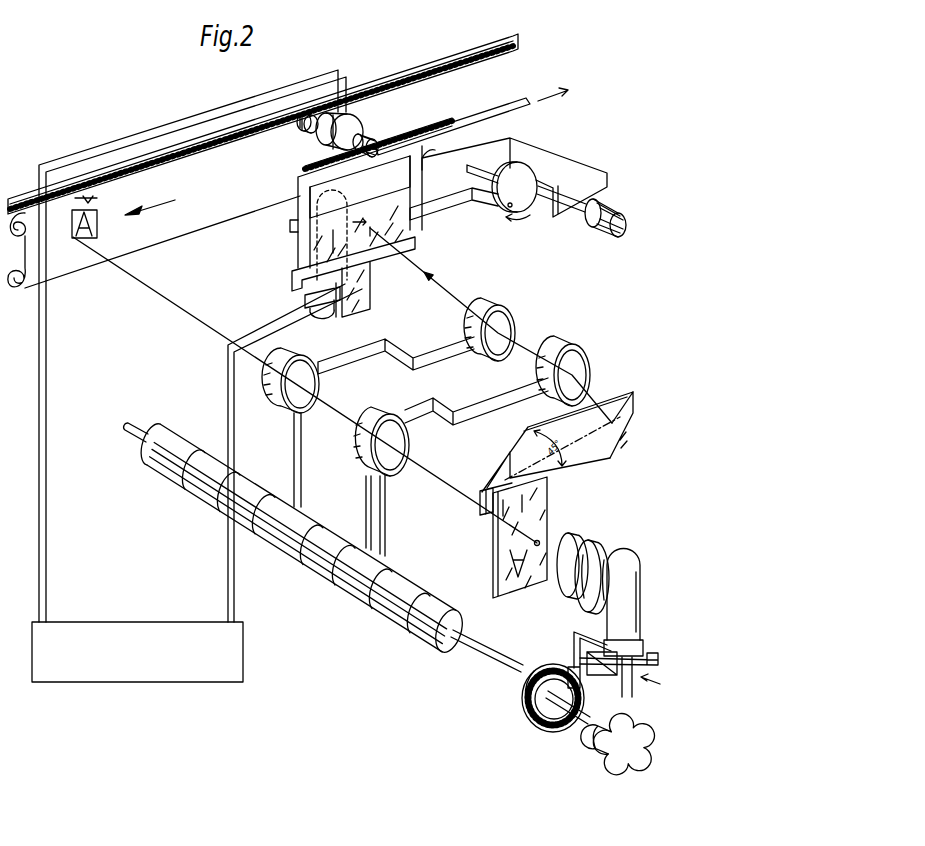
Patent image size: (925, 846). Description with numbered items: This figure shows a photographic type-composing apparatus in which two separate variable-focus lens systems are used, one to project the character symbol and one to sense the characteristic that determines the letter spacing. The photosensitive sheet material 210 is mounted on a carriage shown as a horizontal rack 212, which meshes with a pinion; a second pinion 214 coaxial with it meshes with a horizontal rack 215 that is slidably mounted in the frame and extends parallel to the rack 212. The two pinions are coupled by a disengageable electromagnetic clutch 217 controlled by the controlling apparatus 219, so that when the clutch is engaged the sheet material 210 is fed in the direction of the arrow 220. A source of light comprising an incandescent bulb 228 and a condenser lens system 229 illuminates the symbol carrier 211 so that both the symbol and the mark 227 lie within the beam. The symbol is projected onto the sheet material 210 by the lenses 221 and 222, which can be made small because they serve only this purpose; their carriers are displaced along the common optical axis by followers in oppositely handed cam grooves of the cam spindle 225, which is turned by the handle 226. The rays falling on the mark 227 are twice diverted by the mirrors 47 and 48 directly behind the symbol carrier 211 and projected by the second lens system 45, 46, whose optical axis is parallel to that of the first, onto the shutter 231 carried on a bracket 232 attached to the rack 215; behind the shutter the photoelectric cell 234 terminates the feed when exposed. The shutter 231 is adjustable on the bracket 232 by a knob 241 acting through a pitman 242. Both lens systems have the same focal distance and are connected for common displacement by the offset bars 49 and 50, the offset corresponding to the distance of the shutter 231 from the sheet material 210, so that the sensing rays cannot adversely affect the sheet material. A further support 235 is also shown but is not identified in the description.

The photosensitive sheet material 210 is at (213, 218).
The symbol carrier 211 is at (527, 586).
The rack 212 is at (432, 72).
The second pinion 214 is at (374, 139).
The rack 215 is at (517, 100).
The electromagnetic clutch 217 is at (323, 150).
The controlling apparatus 219 is at (138, 673).
The arrow 220 is at (150, 204).
The lens 221 is at (377, 460).
The lens 222 is at (292, 400).
The cam spindle 225 is at (347, 597).
The handle 226 is at (608, 763).
The mark 227 is at (490, 512).
The incandescent bulb 228 is at (638, 553).
The condenser lens system 229 is at (600, 540).
The shutter 231 is at (410, 227).
The bracket 232 is at (424, 158).
The photoelectric cell 234 is at (345, 200).
The post 235 is at (233, 387).
The knob 241 is at (625, 209).
The pitman 242 is at (463, 206).
The lens 45 is at (518, 315).
The lens 46 is at (580, 357).
The mirror 47 is at (507, 477).
The mirror 48 is at (615, 442).
The bar 49 is at (361, 365).
The bar 50 is at (483, 402).